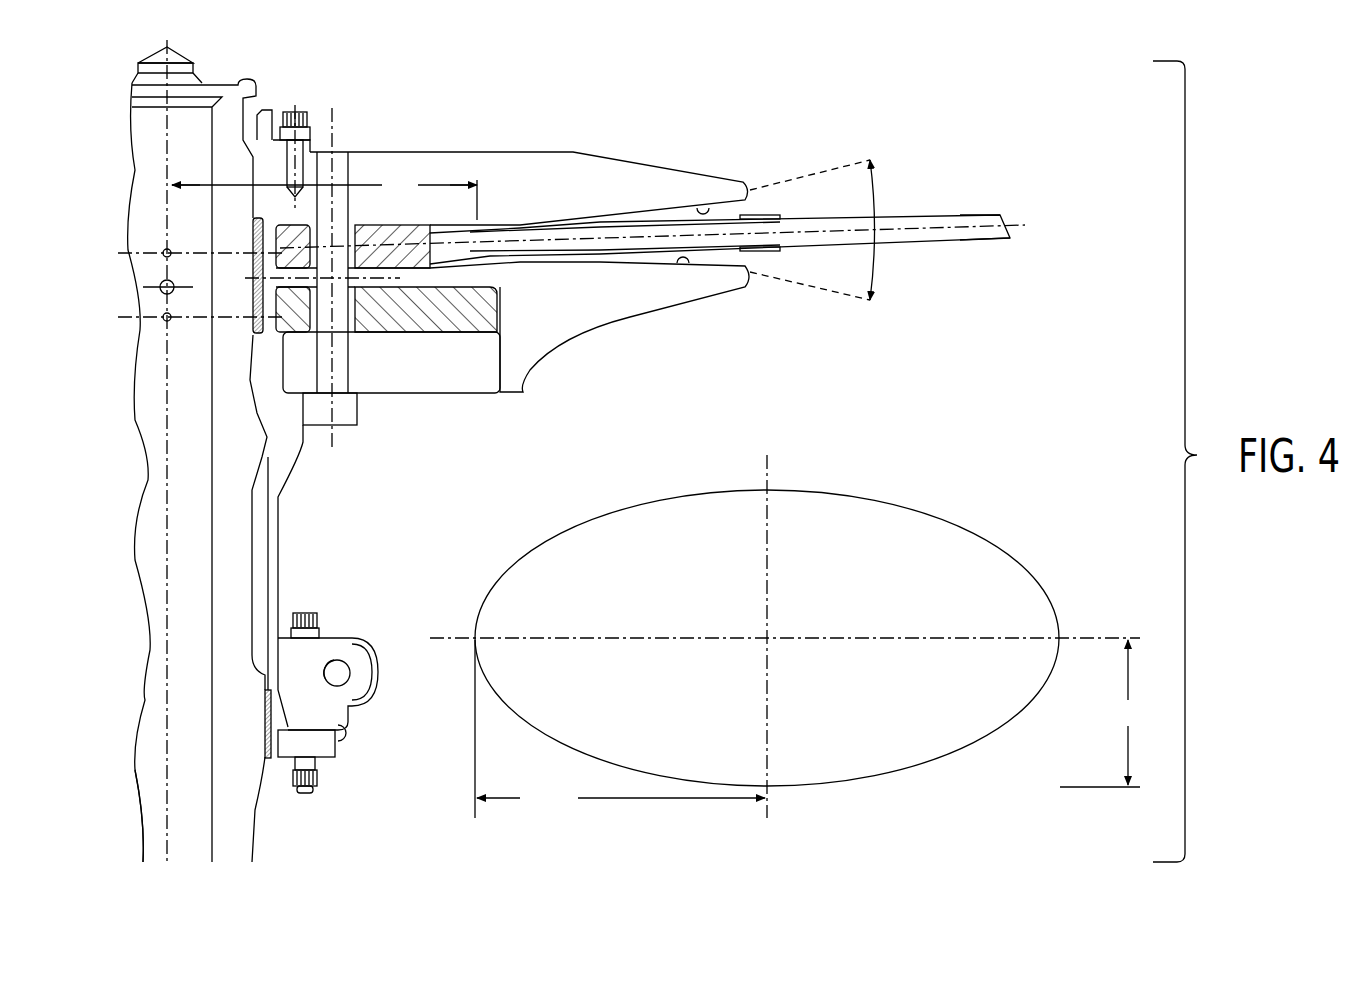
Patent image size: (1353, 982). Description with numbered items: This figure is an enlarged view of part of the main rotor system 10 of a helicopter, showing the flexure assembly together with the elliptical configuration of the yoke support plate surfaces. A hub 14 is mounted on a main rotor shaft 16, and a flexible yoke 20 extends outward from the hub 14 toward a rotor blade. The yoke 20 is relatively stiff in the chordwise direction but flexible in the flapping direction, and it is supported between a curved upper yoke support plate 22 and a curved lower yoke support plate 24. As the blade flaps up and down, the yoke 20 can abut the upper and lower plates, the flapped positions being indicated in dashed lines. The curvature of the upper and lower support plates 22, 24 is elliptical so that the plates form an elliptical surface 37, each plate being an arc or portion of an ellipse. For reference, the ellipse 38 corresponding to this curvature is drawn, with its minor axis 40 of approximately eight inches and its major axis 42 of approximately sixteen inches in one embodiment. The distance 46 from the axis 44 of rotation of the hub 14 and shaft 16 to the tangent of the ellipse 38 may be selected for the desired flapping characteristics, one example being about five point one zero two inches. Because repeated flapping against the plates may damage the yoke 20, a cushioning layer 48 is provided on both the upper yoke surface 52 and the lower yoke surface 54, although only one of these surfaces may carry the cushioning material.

The main rotor system 10 is at (1006, 118).
The hub 14 is at (319, 457).
The main rotor shaft 16 is at (182, 548).
The yoke 20 is at (838, 168).
The upper yoke support plate 22 is at (640, 152).
The lower yoke support plate 24 is at (630, 333).
The elliptical surface 37 is at (705, 203).
The ellipse 38 is at (955, 518).
The minor axis 40 is at (1101, 713).
The major axis 42 is at (620, 729).
The axis of rotation 44 is at (168, 788).
The distance 46 is at (324, 194).
The cushioning layer 48 is at (760, 214).
The upper yoke surface 52 is at (990, 212).
The lower yoke surface 54 is at (975, 243).